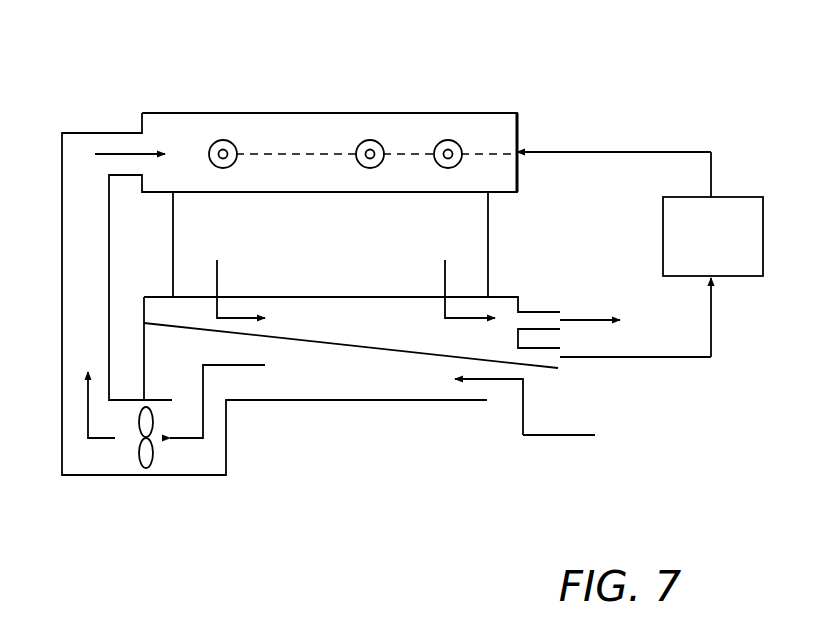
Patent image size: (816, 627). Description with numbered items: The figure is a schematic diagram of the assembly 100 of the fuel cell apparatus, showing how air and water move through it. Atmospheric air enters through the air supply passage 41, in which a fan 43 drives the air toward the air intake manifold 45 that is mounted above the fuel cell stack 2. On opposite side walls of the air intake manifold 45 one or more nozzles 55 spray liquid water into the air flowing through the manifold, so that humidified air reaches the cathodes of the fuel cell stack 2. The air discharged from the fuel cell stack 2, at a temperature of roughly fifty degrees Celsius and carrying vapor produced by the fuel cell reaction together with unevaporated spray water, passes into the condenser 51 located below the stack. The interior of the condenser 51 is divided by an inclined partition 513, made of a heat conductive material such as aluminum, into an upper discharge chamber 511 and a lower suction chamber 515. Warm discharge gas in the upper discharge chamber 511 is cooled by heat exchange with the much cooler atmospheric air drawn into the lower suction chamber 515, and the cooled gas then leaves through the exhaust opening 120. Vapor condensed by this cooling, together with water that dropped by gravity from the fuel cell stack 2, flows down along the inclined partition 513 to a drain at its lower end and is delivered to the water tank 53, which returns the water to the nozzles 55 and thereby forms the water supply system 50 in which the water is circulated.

The assembly 100 is at (131, 75).
The air supply passage 41 is at (62, 199).
The fan 43 is at (146, 476).
The air intake manifold 45 is at (498, 113).
The nozzles 55 is at (226, 141).
The fuel cell stack 2 is at (488, 238).
The condenser 51 is at (357, 492).
The upper discharge chamber 511 is at (395, 335).
The inclined partition 513 is at (342, 347).
The lower suction chamber 515 is at (272, 385).
The exhaust opening 120 is at (538, 311).
The water tank 53 is at (743, 196).
The water supply system 50 is at (751, 355).